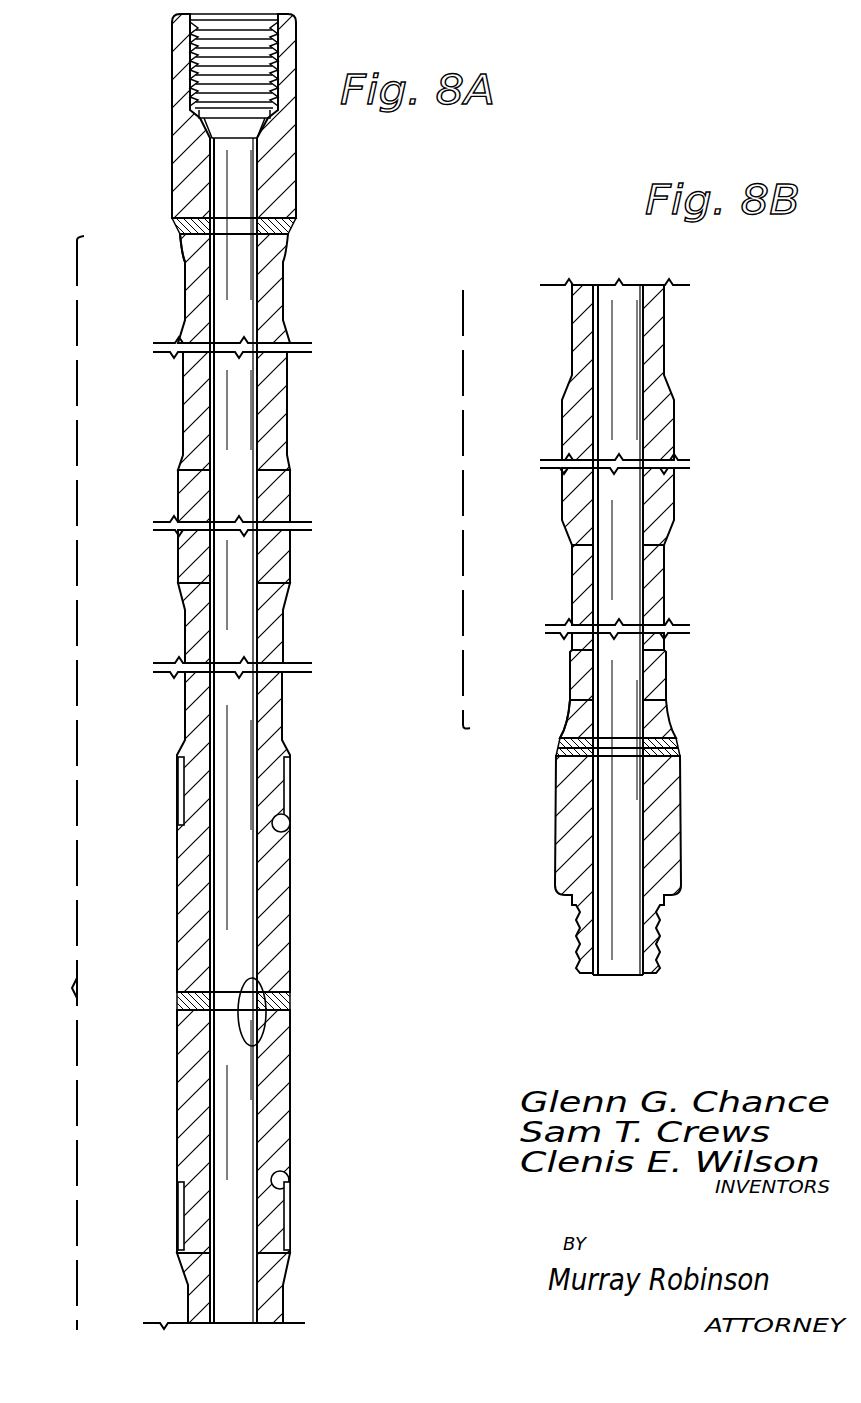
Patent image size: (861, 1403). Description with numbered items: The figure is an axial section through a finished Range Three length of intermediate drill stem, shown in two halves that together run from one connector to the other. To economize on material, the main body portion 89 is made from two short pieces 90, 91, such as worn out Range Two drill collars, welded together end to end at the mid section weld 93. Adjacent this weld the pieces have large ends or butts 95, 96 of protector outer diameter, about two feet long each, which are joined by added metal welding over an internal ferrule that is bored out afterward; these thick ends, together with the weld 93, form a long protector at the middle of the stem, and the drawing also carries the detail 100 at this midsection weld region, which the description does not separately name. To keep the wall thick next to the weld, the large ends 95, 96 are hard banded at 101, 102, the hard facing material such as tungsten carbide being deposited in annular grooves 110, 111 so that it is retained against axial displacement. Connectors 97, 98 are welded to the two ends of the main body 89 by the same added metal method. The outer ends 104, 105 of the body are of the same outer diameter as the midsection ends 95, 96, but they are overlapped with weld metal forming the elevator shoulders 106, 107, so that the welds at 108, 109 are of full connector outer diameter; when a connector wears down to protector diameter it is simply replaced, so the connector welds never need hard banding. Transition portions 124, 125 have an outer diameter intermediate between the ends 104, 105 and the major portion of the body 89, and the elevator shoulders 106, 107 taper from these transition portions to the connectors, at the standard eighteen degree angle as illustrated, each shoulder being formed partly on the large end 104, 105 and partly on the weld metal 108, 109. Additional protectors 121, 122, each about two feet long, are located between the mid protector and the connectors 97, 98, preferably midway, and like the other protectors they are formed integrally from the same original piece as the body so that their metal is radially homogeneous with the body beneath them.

In FIG. 8A, the main body portion 89 is at (53, 783).
In FIG. 8A, the short piece 90 is at (290, 388).
In FIG. 8A, the short piece 91 is at (272, 1301).
In FIG. 8B, the short piece 91 is at (655, 313).
In FIG. 8A, the weld section 93 is at (290, 996).
In FIG. 8A, the large end 95 is at (290, 906).
In FIG. 8A, the large end 96 is at (290, 1128).
In FIG. 8A, the connector 97 is at (178, 150).
In FIG. 8B, the connector 98 is at (682, 816).
In FIG. 8A, the weld 100 is at (263, 1043).
In FIG. 8A, the hard band 101 is at (290, 778).
In FIG. 8A, the hard band 102 is at (290, 1225).
In FIG. 8A, the outer end 104 is at (186, 240).
In FIG. 8B, the outer end 105 is at (672, 722).
In FIG. 8A, the elevator shoulder 106 is at (293, 232).
In FIG. 8B, the elevator shoulder 107 is at (560, 738).
In FIG. 8A, the weld 108 is at (186, 222).
In FIG. 8B, the weld 109 is at (680, 748).
In FIG. 8A, the annular groove 110 is at (290, 845).
In FIG. 8A, the annular groove 111 is at (290, 1172).
In FIG. 8A, the additional protector 121 is at (290, 505).
In FIG. 8B, the additional protector 122 is at (677, 500).
In FIG. 8A, the transition portion 124 is at (288, 290).
In FIG. 8B, the transition portion 125 is at (667, 672).